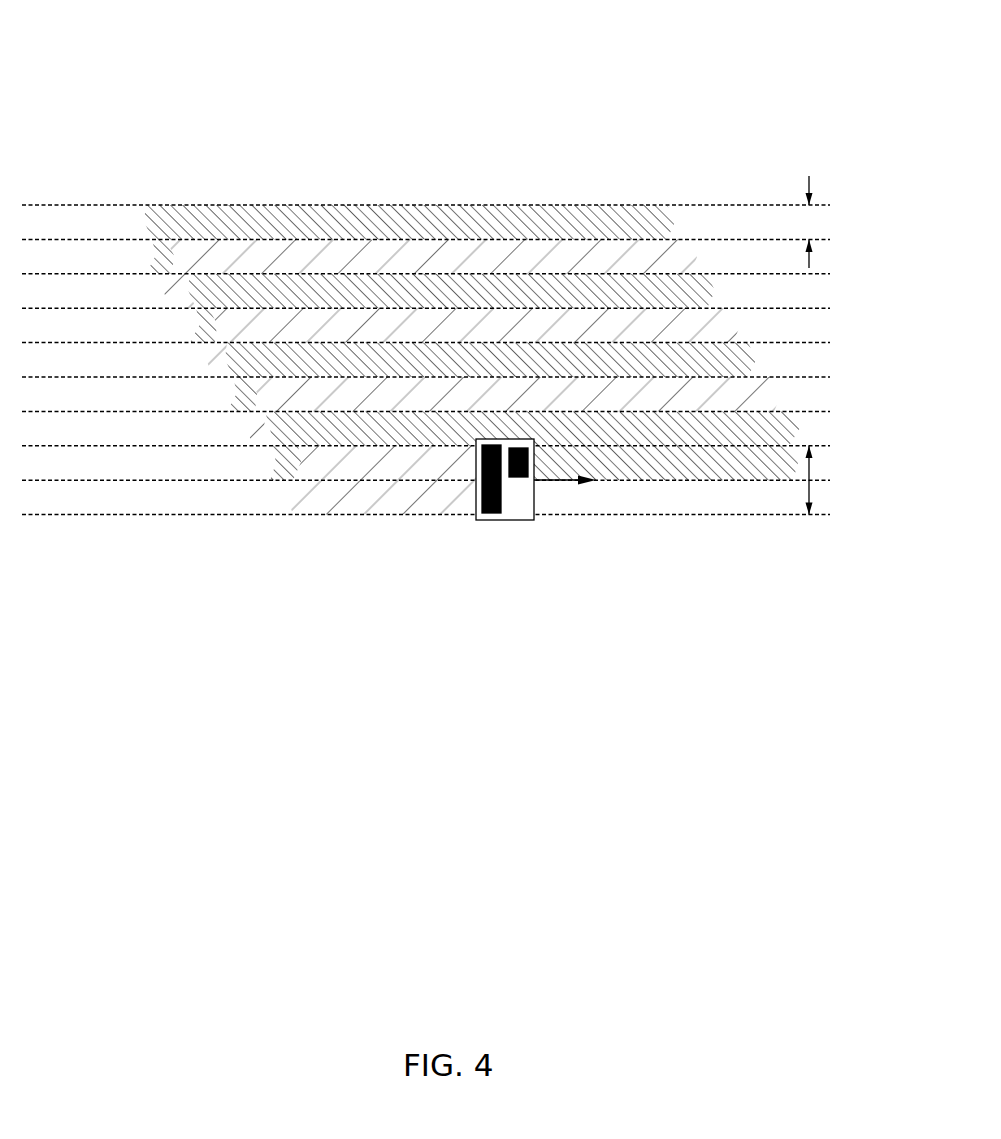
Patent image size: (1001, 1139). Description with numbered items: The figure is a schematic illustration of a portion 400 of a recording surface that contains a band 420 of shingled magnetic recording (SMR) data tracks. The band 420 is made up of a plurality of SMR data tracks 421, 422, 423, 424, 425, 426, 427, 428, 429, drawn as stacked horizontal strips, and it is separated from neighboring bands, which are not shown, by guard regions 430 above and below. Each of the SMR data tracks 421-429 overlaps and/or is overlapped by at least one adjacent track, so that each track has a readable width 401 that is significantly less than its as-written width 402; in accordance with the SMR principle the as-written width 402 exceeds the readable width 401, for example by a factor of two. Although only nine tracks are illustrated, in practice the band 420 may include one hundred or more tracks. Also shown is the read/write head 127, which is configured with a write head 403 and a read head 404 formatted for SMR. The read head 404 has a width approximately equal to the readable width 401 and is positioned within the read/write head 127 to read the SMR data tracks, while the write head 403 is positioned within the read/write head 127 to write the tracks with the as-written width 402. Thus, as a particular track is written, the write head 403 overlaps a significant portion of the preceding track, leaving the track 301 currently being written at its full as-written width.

The portion of recording surface 400 is at (150, 66).
The readable width 401 is at (807, 181).
The as-written width 402 is at (811, 490).
The write head 403 is at (490, 521).
The read head 404 is at (518, 477).
The band 420 is at (267, 204).
The SMR data track 421 is at (426, 221).
The SMR data track 422 is at (426, 255).
The SMR data track 423 is at (426, 290).
The SMR data track 424 is at (426, 324).
The SMR data track 425 is at (426, 359).
The SMR data track 426 is at (426, 393).
The SMR data track 427 is at (426, 427).
The SMR data track 428 is at (426, 462).
The SMR data track 429 is at (426, 497).
The guard region 430 is at (468, 148).
The track being written 301 is at (401, 494).
The read/write head 127 is at (506, 509).